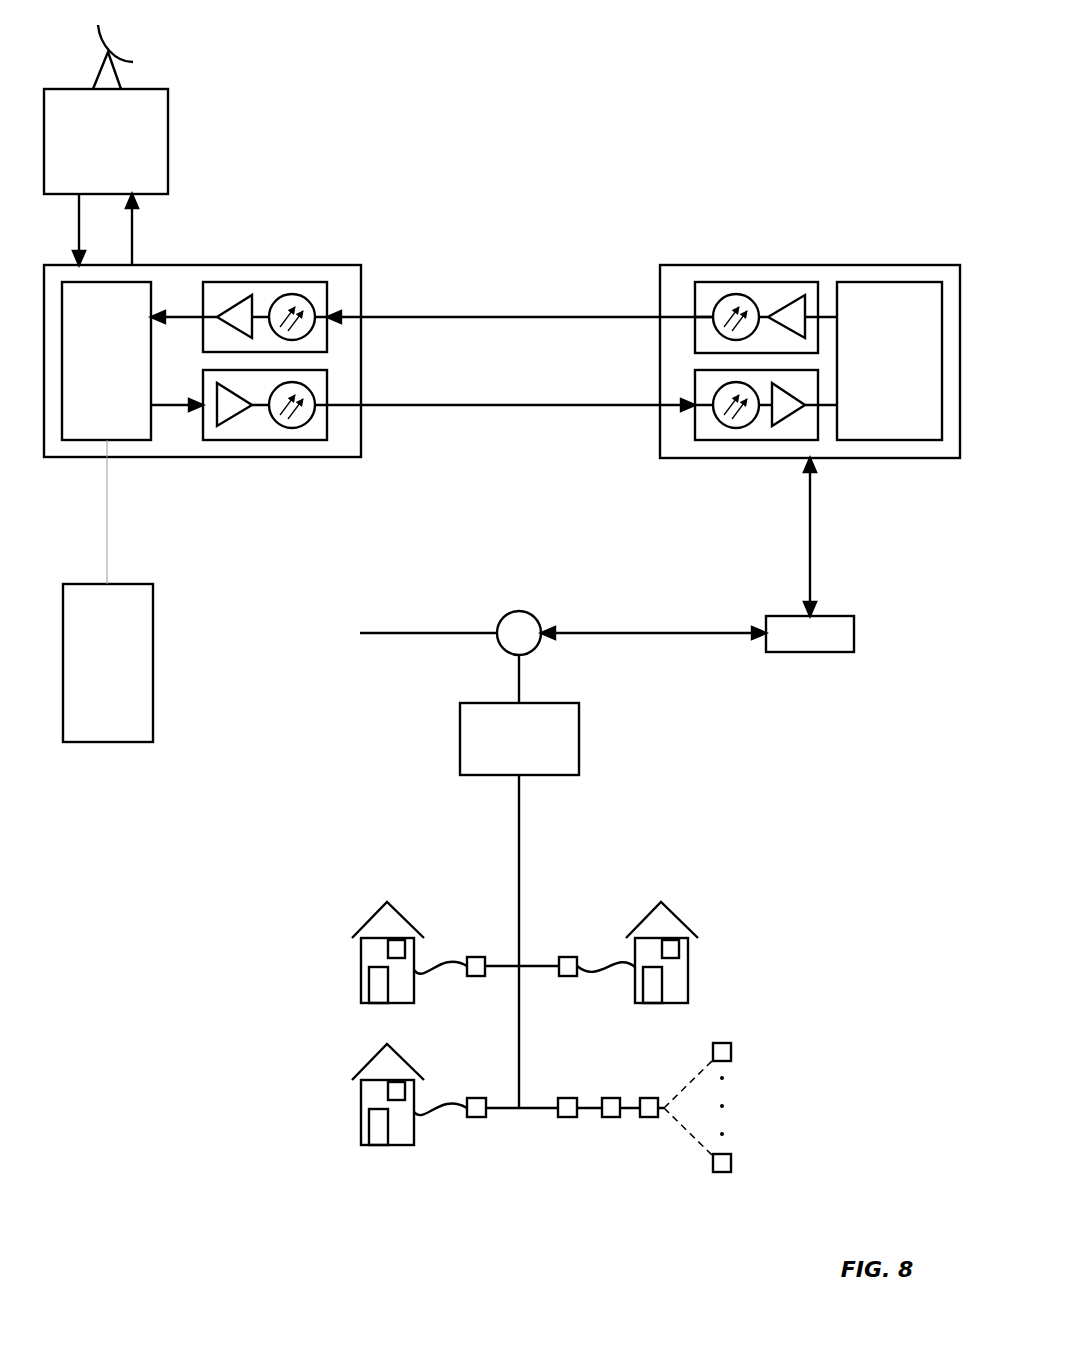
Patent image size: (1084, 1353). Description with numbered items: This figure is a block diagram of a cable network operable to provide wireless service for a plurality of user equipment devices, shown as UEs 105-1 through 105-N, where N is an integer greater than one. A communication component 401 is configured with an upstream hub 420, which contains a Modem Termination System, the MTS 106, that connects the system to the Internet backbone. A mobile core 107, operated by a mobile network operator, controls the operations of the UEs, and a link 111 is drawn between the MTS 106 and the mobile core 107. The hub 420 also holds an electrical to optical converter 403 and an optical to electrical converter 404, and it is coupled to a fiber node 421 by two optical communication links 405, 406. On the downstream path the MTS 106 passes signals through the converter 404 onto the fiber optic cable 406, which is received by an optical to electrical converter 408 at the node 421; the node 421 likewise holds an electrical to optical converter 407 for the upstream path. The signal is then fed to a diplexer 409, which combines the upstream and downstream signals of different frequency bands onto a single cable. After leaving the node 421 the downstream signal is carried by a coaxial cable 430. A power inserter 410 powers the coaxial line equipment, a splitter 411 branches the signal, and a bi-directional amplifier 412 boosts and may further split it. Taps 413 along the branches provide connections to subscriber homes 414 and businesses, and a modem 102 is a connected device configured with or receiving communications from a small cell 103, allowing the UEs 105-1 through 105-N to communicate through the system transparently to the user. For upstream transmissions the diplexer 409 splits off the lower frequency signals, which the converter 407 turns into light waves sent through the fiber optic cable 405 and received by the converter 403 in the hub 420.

The communication component 401 is at (106, 109).
The Modem Termination System (MTS) 106 is at (106, 361).
The mobile core 107 is at (108, 663).
The backhaul connection 111 is at (107, 515).
The upstream hub 420 is at (357, 457).
The optical to electrical converter 404 is at (248, 282).
The electrical to optical converter 403 is at (265, 440).
The optical communication link 406 is at (505, 317).
The optical communication link 405 is at (457, 405).
The fiber node 421 is at (937, 458).
The electrical to optical converter 407 is at (758, 282).
The optical to electrical converter 408 is at (757, 440).
The diplexer 409 is at (889, 361).
The coaxial cable 430 is at (810, 560).
The power inserter 410 is at (810, 634).
The splitter 411 is at (517, 610).
The bi-directional amplifier 412 is at (519, 881).
The taps 413 is at (485, 957).
The subscriber's homes 414 is at (382, 905).
The modem 102 is at (611, 1098).
The small cell 103 is at (655, 1117).
The UE 105-1 is at (722, 1043).
The UE 105-N is at (731, 1165).